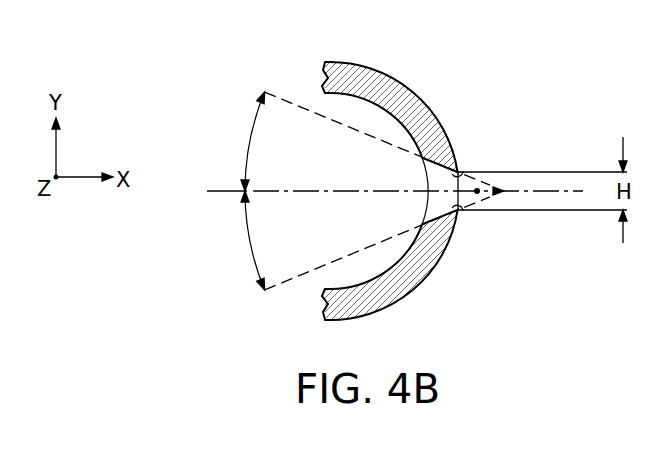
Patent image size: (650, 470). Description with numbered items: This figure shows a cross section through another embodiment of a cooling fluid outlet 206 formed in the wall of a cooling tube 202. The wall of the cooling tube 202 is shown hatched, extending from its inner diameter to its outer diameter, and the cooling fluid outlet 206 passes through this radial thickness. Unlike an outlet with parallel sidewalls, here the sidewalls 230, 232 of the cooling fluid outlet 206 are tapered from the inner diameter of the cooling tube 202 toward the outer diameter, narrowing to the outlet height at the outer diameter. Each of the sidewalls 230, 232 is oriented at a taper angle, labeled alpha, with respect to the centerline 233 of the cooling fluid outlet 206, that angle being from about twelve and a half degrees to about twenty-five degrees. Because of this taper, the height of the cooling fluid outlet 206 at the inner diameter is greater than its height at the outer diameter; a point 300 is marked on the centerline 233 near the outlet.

The cooling tube 202 is at (380, 72).
The cooling fluid outlet 206 is at (413, 176).
The sidewall 230 is at (465, 170).
The sidewall 232 is at (465, 212).
The centerline 233 is at (220, 191).
The focal point 300 is at (479, 189).